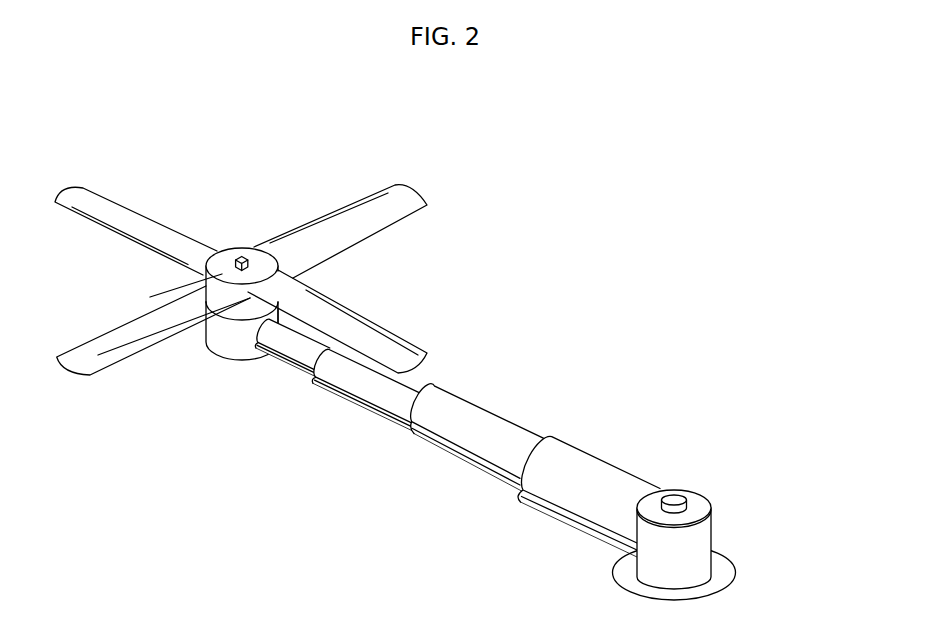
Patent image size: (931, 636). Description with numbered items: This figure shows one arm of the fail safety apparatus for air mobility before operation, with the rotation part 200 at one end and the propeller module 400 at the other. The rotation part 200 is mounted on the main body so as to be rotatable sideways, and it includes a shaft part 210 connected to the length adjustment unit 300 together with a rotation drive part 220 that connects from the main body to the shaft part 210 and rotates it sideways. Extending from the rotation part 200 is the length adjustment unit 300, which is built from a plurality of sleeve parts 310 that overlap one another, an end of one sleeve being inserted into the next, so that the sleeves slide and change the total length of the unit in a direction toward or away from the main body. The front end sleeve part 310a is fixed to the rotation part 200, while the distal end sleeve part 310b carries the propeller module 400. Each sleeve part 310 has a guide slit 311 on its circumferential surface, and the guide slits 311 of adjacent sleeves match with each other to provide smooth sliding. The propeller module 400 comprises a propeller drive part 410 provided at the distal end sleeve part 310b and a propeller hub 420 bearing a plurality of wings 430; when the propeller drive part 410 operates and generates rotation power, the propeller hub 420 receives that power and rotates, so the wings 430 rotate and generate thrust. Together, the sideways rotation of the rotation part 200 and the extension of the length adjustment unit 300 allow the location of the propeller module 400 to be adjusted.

The rotation part 200 is at (732, 496).
The shaft part 210 is at (700, 535).
The rotation drive part 220 is at (722, 570).
The length adjustment unit 300 is at (460, 420).
The sleeve part 310 is at (427, 417).
The front end sleeve part 310a is at (605, 479).
The distal end sleeve part 310b is at (299, 344).
The guide slit 311 is at (430, 436).
The propeller module 400 is at (237, 271).
The propeller drive part 410 is at (233, 343).
The propeller hub 420 is at (227, 254).
The wing 430 is at (88, 197).